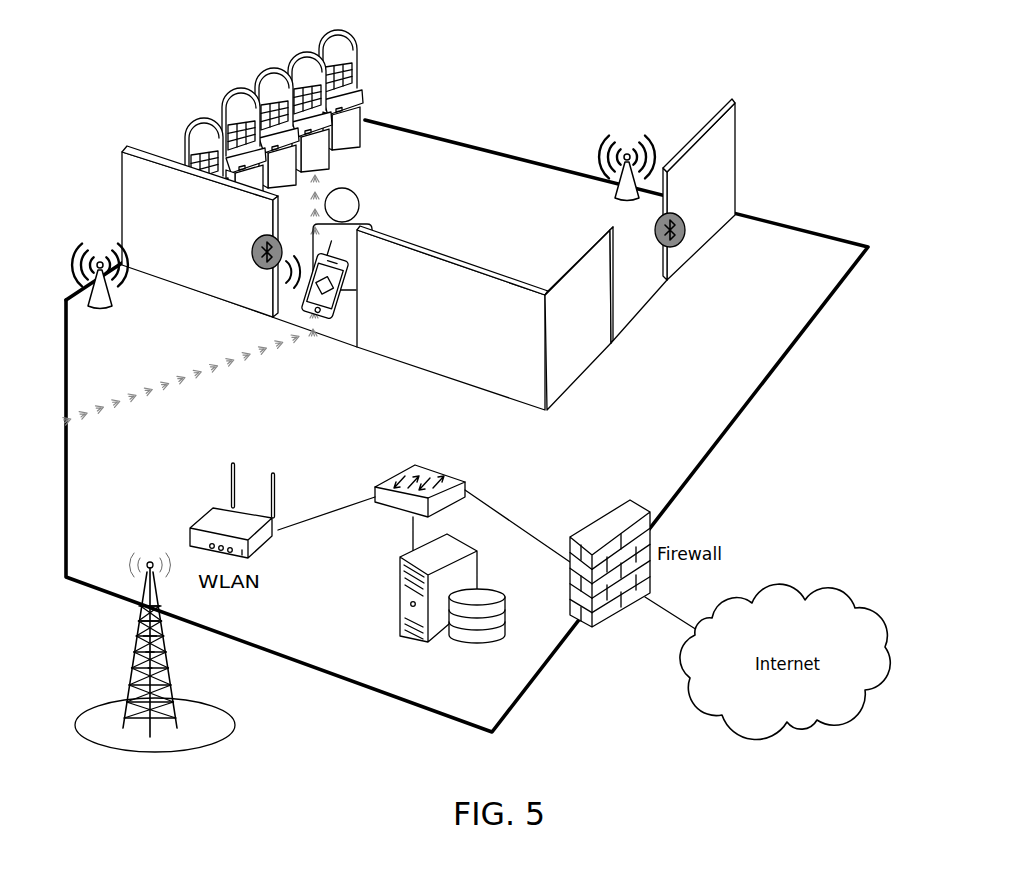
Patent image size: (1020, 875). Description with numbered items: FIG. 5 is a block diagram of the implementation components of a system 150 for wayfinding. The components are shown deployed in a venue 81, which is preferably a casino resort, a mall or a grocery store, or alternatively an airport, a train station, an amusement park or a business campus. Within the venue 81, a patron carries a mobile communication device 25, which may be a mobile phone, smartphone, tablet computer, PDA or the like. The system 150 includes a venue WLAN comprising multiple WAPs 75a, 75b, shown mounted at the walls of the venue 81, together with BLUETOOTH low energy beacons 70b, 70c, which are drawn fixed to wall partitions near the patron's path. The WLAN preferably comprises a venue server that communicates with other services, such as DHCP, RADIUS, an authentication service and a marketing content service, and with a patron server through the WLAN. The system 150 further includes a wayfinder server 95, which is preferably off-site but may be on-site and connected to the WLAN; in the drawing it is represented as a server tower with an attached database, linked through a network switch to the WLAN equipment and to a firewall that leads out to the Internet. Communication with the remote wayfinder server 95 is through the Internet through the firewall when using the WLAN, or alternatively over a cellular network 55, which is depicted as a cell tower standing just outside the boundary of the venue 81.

The system for wayfinding 150 is at (640, 71).
The venue 81 is at (730, 456).
The mobile communication device 25 is at (337, 310).
The WAP 75a is at (100, 306).
The WAP 75b is at (630, 199).
The BLUETOOTH low energy beacon 70b is at (256, 268).
The BLUETOOTH low energy beacon 70c is at (686, 232).
The wayfinder server 95 is at (396, 587).
The cellular network 55 is at (166, 652).